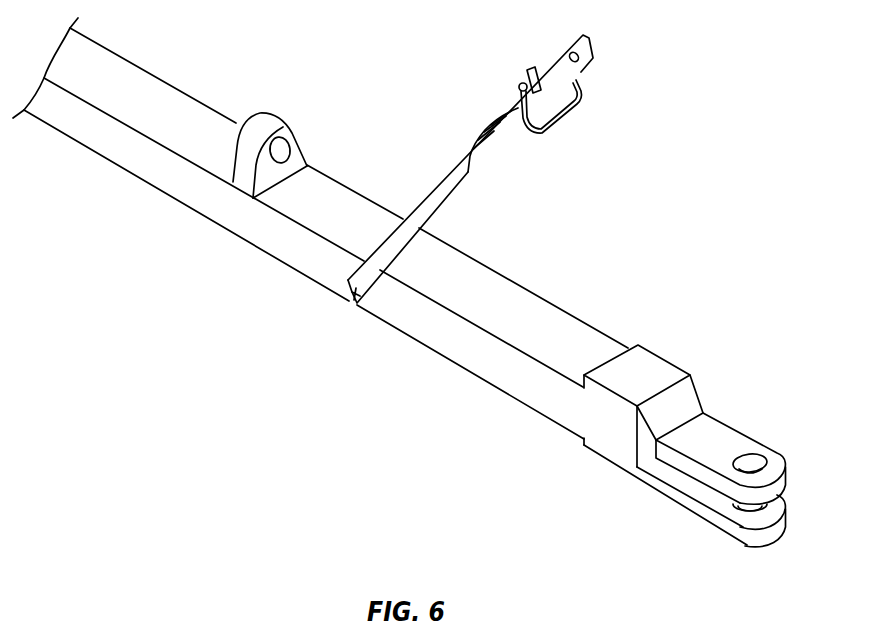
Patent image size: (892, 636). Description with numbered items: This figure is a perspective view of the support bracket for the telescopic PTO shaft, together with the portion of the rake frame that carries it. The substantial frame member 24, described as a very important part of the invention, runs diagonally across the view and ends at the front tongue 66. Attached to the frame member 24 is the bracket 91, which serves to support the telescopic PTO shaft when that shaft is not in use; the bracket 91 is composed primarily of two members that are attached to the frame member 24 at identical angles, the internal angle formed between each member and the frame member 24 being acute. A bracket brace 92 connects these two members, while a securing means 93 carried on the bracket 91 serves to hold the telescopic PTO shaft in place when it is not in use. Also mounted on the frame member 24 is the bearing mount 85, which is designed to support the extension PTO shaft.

The frame member 24 is at (110, 148).
The bearing mount 85 is at (278, 130).
The bracket 91 is at (562, 63).
The bracket brace 92 is at (490, 138).
The securing means 93 is at (578, 100).
The front tongue 66 is at (762, 518).